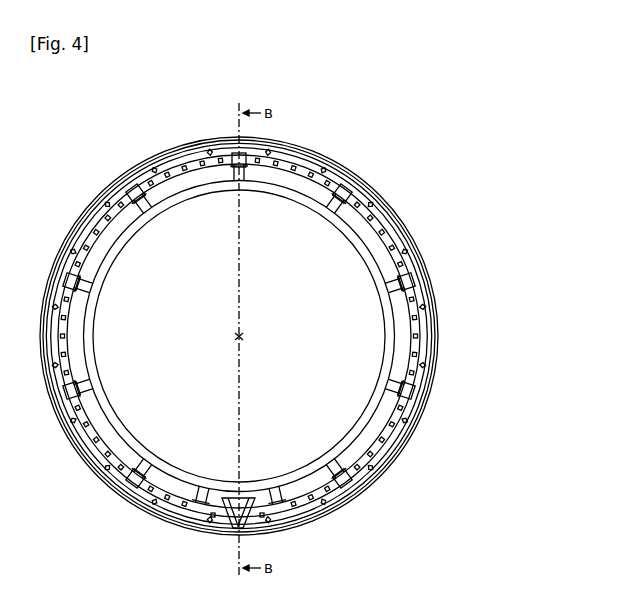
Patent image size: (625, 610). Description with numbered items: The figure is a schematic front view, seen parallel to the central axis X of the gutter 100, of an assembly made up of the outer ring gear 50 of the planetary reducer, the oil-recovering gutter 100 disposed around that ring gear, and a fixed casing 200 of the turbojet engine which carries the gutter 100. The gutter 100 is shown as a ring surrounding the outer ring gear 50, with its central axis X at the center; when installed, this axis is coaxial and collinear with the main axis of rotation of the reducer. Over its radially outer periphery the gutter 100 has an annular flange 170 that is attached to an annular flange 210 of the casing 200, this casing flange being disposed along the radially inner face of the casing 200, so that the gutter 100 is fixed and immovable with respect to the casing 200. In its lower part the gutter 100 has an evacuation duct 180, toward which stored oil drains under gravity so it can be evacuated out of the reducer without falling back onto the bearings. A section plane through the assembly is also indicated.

The outer ring gear 50 is at (368, 344).
The gutter 100 is at (309, 187).
The annular flange 170 is at (289, 163).
The evacuation duct 180 is at (241, 534).
The fixed casing 200 is at (276, 139).
The annular flange 210 is at (200, 150).
The central axis X is at (241, 337).